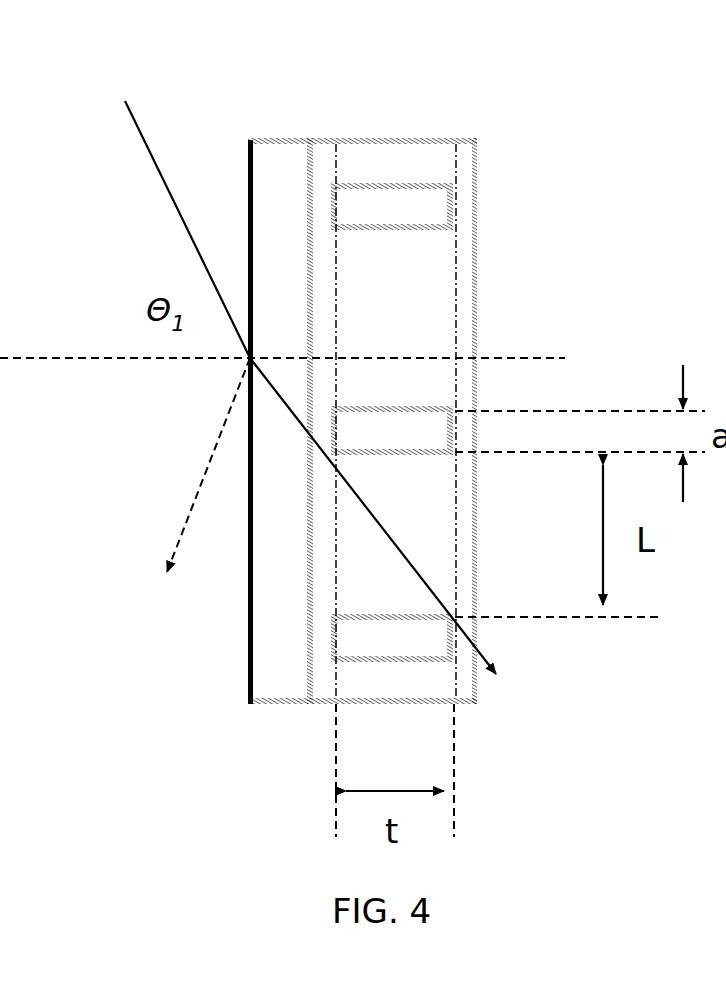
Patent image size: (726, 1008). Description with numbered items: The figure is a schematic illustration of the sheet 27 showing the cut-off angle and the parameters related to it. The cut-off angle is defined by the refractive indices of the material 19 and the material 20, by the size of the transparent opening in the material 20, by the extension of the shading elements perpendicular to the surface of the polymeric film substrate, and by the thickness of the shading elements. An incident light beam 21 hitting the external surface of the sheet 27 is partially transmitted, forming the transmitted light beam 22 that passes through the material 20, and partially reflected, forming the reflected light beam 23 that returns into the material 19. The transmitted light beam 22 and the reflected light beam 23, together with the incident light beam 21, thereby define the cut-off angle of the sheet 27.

The material 19 is at (282, 304).
The material 20 is at (392, 422).
The incident light beam 21 is at (163, 148).
The transmitted light beam 22 is at (503, 667).
The reflected light beam 23 is at (185, 555).
The sheet 27 is at (362, 102).